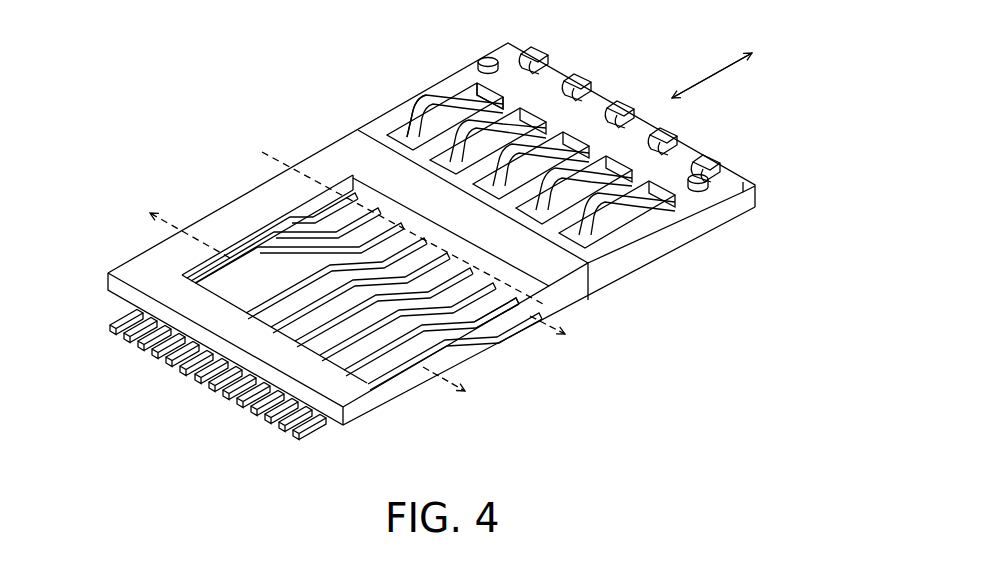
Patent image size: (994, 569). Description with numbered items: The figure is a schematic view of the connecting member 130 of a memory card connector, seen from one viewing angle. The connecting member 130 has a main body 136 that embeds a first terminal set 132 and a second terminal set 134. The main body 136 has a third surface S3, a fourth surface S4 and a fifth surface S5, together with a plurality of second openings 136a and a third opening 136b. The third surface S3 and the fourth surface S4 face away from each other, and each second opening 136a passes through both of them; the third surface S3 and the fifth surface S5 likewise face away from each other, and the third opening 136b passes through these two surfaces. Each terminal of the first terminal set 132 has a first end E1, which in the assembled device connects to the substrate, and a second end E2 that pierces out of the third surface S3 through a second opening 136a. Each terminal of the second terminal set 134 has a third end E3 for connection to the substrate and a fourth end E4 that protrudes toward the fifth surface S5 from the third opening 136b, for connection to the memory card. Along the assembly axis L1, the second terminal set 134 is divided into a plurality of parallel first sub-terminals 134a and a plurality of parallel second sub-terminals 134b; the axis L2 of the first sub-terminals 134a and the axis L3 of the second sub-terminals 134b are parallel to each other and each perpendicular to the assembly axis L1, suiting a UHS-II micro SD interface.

The connecting member 130 is at (722, 456).
The first terminal set 132 is at (472, 81).
The second terminal set 134 is at (341, 250).
The first sub-terminals 134a is at (258, 248).
The second sub-terminals 134b is at (220, 283).
The main body 136 is at (623, 284).
The second openings 136a is at (483, 92).
The third opening 136b is at (355, 188).
The first end E1 is at (530, 56).
The second end E2 is at (418, 118).
The third end E3 is at (117, 323).
The fourth end E4 is at (277, 250).
The assembly axis L1 is at (702, 84).
The axis of the first sub-terminals L2 is at (392, 215).
The axis of the second sub-terminals L3 is at (174, 229).
The third surface S3 is at (126, 270).
The fourth surface S4 is at (710, 236).
The fifth surface S5 is at (388, 400).